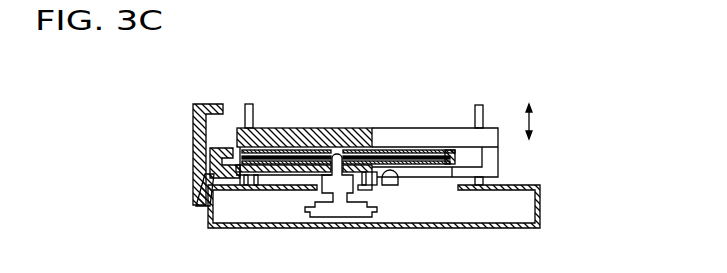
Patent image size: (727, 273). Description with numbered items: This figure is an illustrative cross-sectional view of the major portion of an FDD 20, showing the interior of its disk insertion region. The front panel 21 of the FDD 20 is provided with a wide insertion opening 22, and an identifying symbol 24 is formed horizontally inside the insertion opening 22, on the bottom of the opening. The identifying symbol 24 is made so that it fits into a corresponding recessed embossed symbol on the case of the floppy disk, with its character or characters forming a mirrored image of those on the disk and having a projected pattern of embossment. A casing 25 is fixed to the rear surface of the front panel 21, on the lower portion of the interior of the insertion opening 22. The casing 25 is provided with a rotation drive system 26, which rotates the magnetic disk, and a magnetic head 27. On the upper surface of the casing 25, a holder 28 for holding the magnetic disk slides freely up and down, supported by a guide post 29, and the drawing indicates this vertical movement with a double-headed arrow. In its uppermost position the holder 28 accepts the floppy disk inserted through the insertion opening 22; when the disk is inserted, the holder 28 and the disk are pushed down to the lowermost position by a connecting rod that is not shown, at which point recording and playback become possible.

The FDD 20 is at (554, 99).
The front panel 21 is at (194, 117).
The insertion opening 22 is at (204, 150).
The identifying symbol 24 is at (205, 183).
The casing 25 is at (540, 213).
The rotation drive system 26 is at (347, 222).
The magnetic head 27 is at (400, 186).
The holder 28 is at (345, 128).
The guide post 29 is at (253, 108).